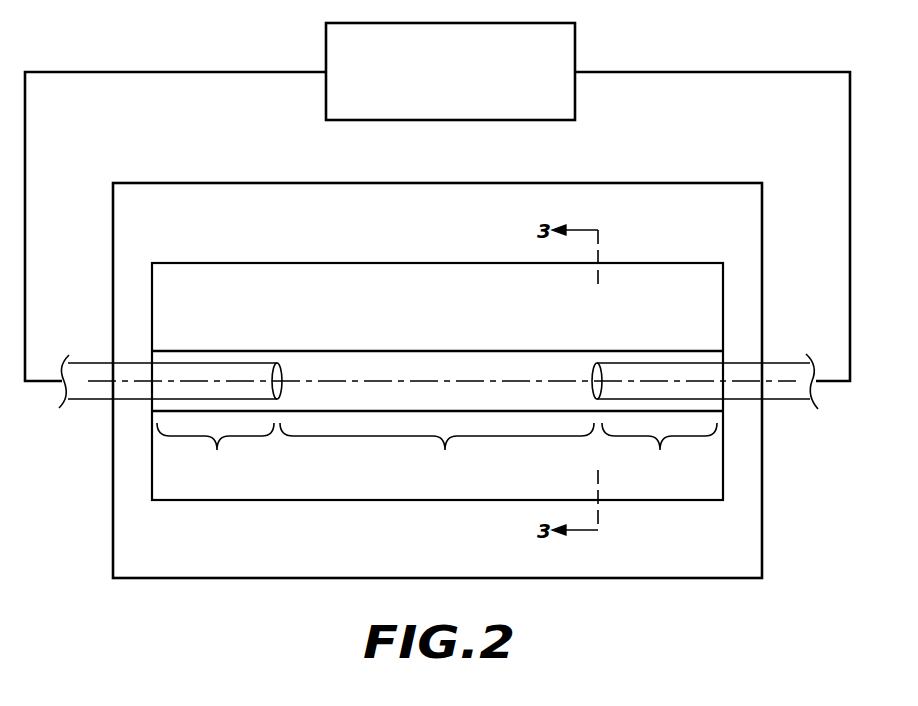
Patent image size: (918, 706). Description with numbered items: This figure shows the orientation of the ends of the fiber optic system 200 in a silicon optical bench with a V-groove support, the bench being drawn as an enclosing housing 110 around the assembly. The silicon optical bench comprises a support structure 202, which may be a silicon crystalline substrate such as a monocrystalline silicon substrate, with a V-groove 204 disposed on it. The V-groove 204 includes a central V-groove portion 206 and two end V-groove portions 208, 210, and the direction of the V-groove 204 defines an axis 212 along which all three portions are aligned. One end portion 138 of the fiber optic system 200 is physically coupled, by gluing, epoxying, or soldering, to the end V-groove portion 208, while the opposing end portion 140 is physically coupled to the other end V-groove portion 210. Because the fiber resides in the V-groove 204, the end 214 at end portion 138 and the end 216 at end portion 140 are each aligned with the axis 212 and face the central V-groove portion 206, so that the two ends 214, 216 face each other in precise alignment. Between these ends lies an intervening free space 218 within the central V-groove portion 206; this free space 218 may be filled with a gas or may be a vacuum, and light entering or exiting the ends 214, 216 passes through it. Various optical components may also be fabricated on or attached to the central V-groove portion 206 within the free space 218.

The fiber optic system 200 is at (561, 51).
The housing 110 is at (735, 226).
The support structure 202 is at (706, 294).
The V-groove 204 is at (380, 351).
The axis 212 is at (448, 380).
The end portion 138 is at (172, 363).
The opposing end portion 140 is at (660, 363).
The end 214 is at (282, 366).
The end 216 is at (593, 366).
The intervening free space 218 is at (333, 372).
The end V-groove portion 208 is at (215, 450).
The central V-groove portion 206 is at (437, 450).
The end V-groove portion 210 is at (659, 450).